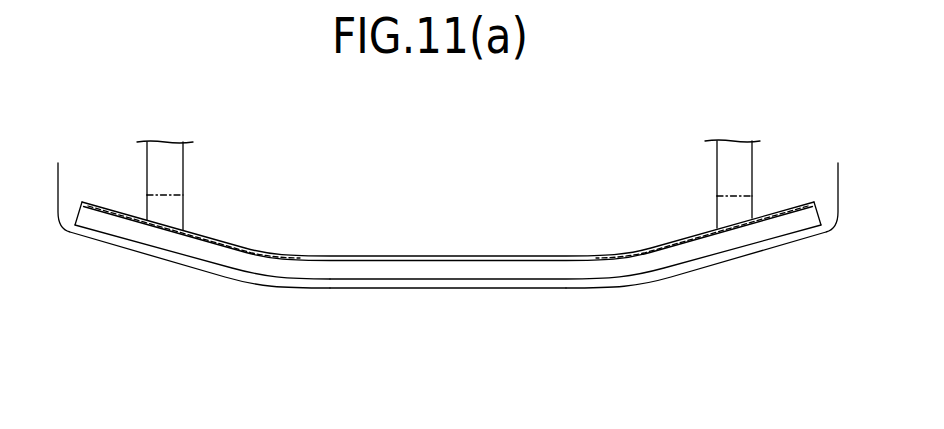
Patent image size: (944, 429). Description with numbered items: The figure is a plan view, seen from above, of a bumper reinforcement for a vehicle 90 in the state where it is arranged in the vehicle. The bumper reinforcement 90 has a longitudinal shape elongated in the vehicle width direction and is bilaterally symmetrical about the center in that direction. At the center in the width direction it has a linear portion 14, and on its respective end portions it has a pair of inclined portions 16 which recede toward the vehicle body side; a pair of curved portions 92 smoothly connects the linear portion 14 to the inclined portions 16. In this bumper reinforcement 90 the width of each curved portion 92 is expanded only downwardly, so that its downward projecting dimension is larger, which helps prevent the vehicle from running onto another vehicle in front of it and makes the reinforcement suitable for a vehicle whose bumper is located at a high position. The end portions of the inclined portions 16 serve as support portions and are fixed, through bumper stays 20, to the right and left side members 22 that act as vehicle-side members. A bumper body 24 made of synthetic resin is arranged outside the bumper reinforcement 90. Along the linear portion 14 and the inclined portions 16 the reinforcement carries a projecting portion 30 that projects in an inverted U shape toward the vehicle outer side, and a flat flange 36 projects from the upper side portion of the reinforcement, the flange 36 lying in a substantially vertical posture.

The linear portion 14 is at (436, 299).
The inclined portions 16 is at (127, 267).
The bumper stays 20 is at (173, 212).
The side members 22 is at (156, 170).
The bumper body 24 is at (557, 290).
The projecting portion 30 is at (157, 237).
The flange 36 is at (432, 254).
The bumper reinforcement for a vehicle 90 is at (293, 331).
The curved portions 92 is at (281, 241).